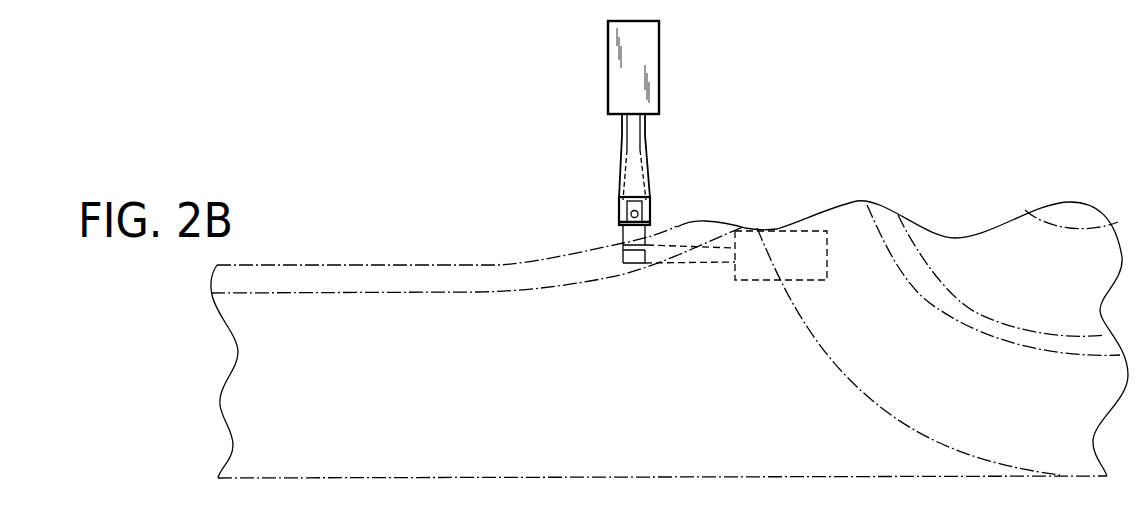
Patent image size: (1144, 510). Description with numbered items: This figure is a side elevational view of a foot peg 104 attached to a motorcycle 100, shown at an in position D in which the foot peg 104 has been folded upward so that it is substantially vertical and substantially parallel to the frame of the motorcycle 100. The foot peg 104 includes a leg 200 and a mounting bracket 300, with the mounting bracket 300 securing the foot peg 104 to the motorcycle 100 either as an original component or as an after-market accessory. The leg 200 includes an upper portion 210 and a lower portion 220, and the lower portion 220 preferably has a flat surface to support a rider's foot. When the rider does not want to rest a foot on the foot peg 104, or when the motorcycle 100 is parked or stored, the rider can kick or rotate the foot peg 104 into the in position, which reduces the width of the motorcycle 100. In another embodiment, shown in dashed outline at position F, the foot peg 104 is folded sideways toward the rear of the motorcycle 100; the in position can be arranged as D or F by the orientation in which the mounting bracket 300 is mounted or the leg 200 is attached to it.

The motorcycle 100 is at (859, 216).
The foot peg 104 is at (548, 118).
The leg 200 is at (659, 142).
The upper portion 210 is at (652, 192).
The lower portion 220 is at (659, 41).
The mounting bracket 300 is at (621, 206).